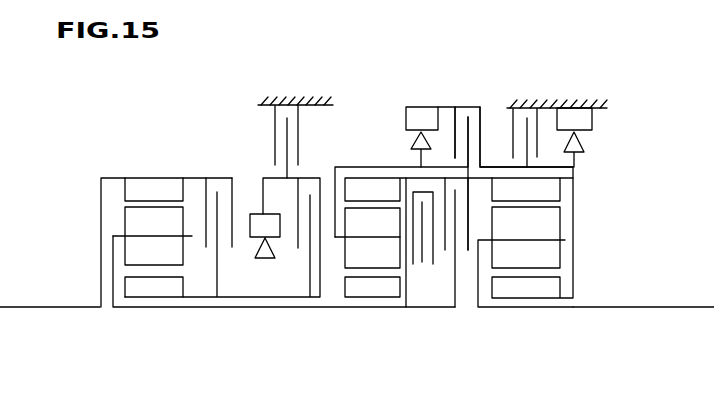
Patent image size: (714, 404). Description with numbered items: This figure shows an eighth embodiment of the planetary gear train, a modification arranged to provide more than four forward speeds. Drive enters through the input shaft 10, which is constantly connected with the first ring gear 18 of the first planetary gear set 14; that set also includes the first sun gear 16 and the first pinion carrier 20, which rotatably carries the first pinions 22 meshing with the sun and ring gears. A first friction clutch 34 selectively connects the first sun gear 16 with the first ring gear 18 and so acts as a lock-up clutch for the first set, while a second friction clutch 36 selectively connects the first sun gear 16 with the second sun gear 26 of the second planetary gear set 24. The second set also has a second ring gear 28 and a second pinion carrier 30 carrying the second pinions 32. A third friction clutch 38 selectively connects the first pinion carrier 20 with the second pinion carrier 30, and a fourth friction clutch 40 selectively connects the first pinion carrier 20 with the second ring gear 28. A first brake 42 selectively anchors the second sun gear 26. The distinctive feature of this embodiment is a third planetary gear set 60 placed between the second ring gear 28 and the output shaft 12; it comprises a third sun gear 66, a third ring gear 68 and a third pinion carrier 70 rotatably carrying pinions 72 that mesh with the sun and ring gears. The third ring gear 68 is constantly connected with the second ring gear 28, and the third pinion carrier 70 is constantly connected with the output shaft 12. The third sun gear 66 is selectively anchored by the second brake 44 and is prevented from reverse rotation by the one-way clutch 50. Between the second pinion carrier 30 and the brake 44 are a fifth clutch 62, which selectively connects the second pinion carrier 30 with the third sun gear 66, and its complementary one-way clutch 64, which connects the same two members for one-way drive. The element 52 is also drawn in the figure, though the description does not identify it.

The input shaft 10 is at (74, 307).
The output shaft 12 is at (612, 307).
The first planetary gear set 14 is at (147, 174).
The first sun gear 16 is at (150, 291).
The first ring gear 18 is at (137, 184).
The first pinion carrier 20 is at (113, 292).
The first pinions 22 is at (183, 257).
The second planetary gear set 24 is at (361, 164).
The second sun gear 26 is at (368, 293).
The second ring gear 28 is at (358, 188).
The second pinion carrier 30 is at (342, 238).
The second pinions 32 is at (427, 275).
The first friction clutch 34 is at (211, 174).
The second friction clutch 36 is at (303, 252).
The third friction clutch 38 is at (446, 266).
The fourth friction clutch 40 is at (455, 310).
The first brake 42 is at (268, 128).
The second brake 44 is at (539, 130).
The one-way clutch 50 is at (589, 139).
The actuator 52 is at (268, 260).
The third planetary gear set 60 is at (493, 158).
The fifth clutch 62 is at (457, 104).
The one-way clutch 64 is at (408, 138).
The third sun gear 66 is at (552, 293).
The third ring gear 68 is at (552, 194).
The third pinion carrier 70 is at (483, 268).
The third pinions 72 is at (488, 266).